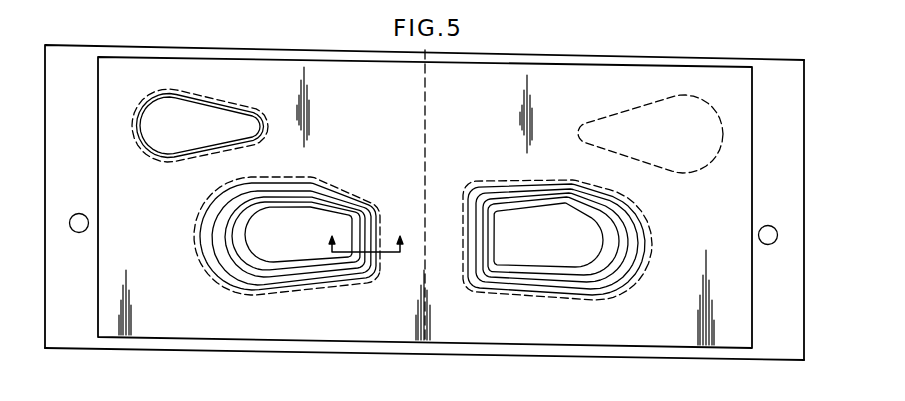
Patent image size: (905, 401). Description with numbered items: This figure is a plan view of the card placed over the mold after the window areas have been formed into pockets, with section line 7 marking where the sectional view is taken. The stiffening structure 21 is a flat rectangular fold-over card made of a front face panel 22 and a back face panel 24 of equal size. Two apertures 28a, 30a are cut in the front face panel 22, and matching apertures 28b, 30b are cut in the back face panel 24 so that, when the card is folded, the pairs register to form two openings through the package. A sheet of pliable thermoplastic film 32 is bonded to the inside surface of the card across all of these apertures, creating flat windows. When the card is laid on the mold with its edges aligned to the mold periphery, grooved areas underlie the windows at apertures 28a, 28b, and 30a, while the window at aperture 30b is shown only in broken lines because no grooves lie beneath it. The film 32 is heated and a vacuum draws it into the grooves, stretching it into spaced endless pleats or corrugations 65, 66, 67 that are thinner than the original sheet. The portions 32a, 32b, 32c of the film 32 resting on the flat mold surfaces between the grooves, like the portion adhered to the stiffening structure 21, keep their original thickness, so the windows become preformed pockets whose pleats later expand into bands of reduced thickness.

The stiffening structure 21 is at (68, 56).
The front face panel 22 is at (76, 333).
The back face panel 24 is at (767, 342).
The pliable film sheet 32 is at (270, 58).
The aperture 30a is at (140, 147).
The aperture 30b is at (675, 165).
The aperture 28a is at (192, 235).
The aperture 28b is at (640, 268).
The film portion 32a is at (213, 257).
The film portion 32b is at (224, 272).
The film portion 32c is at (278, 267).
The pleat 65 is at (310, 208).
The pleat 66 is at (264, 182).
The pleat 67 is at (307, 193).
The section line 7- 7 is at (365, 234).